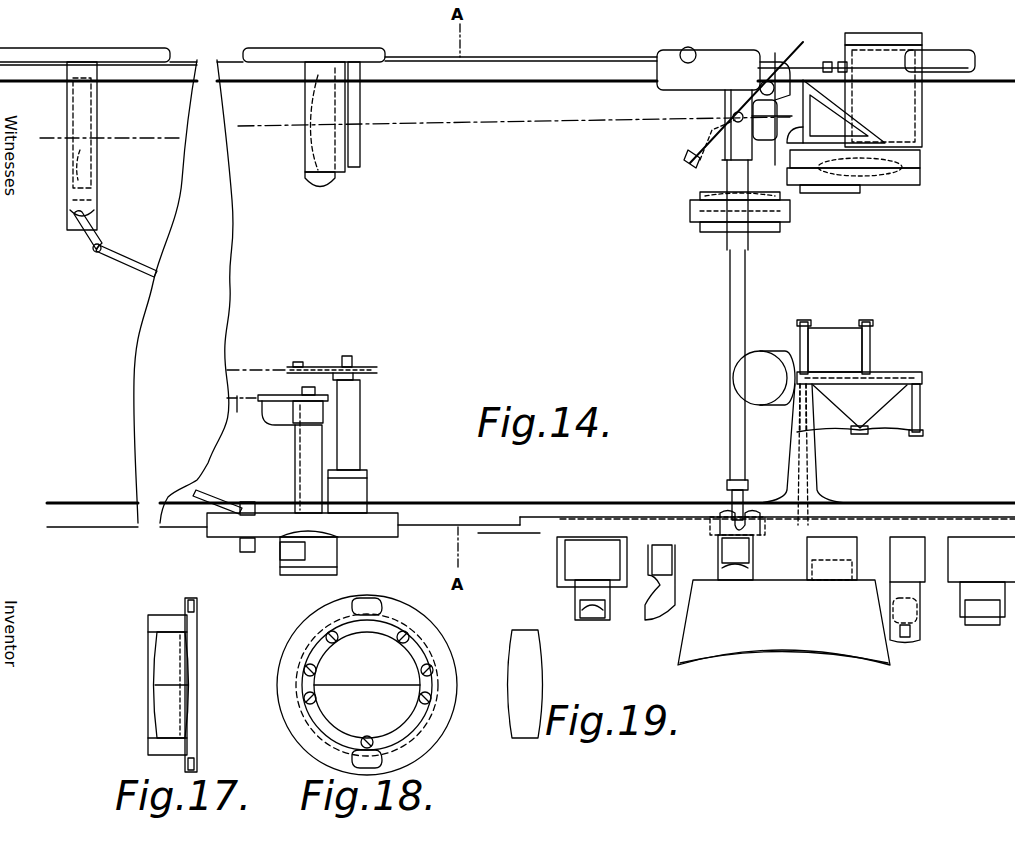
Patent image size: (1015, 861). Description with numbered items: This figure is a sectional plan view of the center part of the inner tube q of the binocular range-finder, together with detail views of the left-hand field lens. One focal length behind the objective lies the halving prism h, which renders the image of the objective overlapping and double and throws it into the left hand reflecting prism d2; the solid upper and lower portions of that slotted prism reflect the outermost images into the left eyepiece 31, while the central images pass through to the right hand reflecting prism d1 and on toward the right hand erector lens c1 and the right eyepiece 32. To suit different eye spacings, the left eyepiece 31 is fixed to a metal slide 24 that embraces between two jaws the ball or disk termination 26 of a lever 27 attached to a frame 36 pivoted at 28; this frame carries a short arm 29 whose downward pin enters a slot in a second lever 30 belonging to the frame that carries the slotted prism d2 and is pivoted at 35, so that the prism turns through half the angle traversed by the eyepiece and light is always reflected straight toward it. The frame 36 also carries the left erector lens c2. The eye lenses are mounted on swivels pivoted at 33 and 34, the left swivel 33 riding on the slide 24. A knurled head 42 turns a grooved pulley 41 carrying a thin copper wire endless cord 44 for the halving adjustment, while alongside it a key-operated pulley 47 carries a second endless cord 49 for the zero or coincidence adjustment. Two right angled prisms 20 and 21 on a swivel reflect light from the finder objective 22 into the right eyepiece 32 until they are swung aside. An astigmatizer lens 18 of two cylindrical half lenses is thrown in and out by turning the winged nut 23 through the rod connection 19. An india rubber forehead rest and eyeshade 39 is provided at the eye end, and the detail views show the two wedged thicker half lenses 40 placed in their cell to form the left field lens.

In FIG. 14, the astigmatizer lens 18 is at (93, 190).
In FIG. 14, the rod connection 19 is at (151, 270).
In FIG. 14, the halving prism h is at (320, 145).
In FIG. 14, the pivot of the prism frame 35 is at (746, 94).
In FIG. 14, the left hand reflecting prism d2 is at (722, 108).
In FIG. 14, the pivot of the lever frame 28 is at (724, 118).
In FIG. 14, the second lever 30 is at (713, 131).
In FIG. 14, the short arm 29 is at (692, 162).
In FIG. 14, the lever frame 36 is at (745, 177).
In FIG. 14, the left erector lens c2 is at (700, 211).
In FIG. 14, the right hand reflecting prism d1 is at (836, 111).
In FIG. 14, the finder objective 22 is at (903, 156).
In FIG. 14, the right hand erector lens c1 is at (852, 172).
In FIG. 14, the lever 27 is at (738, 307).
In FIG. 14, the right angled prism 21 is at (835, 347).
In FIG. 14, the right angled prism 20 is at (860, 404).
In FIG. 14, the copper wire endless cord 49 is at (272, 369).
In FIG. 14, the pulley 47 is at (365, 372).
In FIG. 14, the copper wire endless cord 44 is at (242, 416).
In FIG. 14, the grooved pulley 41 is at (302, 410).
In FIG. 14, the inner tube q is at (113, 503).
In FIG. 14, the winged nut 23 is at (243, 548).
In FIG. 14, the knurled head 42 is at (285, 550).
In FIG. 14, the metal slide 24 is at (722, 520).
In FIG. 14, the ball or disk termination 26 is at (737, 513).
In FIG. 14, the left swivel 33 is at (663, 538).
In FIG. 14, the left eyepiece 31 is at (752, 563).
In FIG. 14, the block 32 is at (824, 565).
In FIG. 14, the right swivel 34 is at (908, 538).
In FIG. 14, the forehead rest and eyeshade 39 is at (784, 622).
In FIG. 17, the wedged half lenses 40 is at (165, 660).